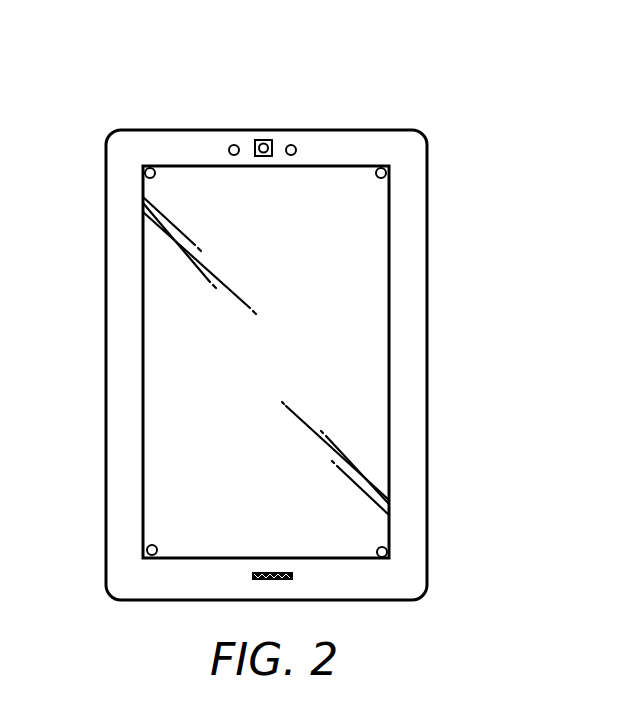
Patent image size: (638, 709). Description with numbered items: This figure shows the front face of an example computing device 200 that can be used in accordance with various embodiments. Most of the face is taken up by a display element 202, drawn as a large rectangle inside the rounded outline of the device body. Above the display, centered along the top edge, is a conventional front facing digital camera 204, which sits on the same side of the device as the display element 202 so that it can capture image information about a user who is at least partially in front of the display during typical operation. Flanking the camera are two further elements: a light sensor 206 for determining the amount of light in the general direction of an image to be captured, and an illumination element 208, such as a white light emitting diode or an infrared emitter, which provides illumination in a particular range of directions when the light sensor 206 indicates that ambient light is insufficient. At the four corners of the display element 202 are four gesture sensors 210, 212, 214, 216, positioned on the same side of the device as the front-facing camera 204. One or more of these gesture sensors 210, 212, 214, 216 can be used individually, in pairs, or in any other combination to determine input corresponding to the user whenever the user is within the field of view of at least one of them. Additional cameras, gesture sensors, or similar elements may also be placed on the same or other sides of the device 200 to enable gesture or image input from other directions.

The computing device 200 is at (560, 93).
The display element 202 is at (143, 395).
The front facing digital camera 204 is at (258, 142).
The light sensor 206 is at (294, 147).
The illumination element 208 is at (230, 147).
The gesture sensor 210 is at (145, 172).
The gesture sensor 212 is at (386, 173).
The gesture sensor 214 is at (147, 550).
The gesture sensor 216 is at (388, 552).